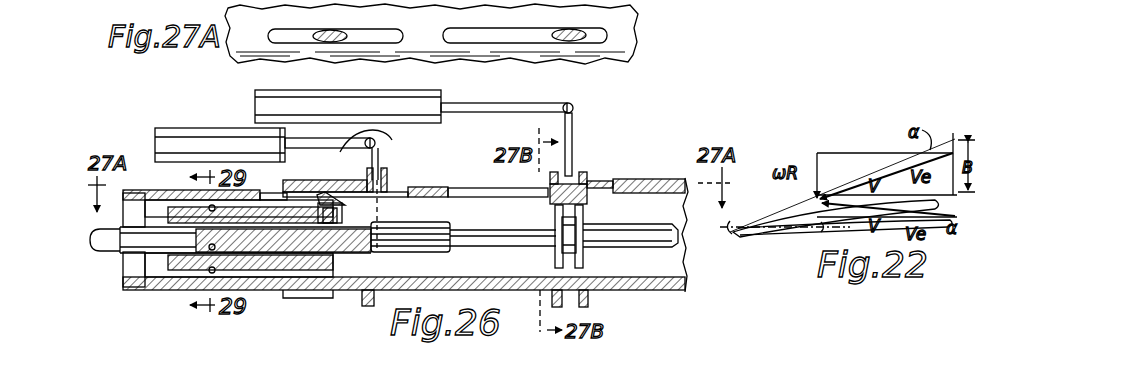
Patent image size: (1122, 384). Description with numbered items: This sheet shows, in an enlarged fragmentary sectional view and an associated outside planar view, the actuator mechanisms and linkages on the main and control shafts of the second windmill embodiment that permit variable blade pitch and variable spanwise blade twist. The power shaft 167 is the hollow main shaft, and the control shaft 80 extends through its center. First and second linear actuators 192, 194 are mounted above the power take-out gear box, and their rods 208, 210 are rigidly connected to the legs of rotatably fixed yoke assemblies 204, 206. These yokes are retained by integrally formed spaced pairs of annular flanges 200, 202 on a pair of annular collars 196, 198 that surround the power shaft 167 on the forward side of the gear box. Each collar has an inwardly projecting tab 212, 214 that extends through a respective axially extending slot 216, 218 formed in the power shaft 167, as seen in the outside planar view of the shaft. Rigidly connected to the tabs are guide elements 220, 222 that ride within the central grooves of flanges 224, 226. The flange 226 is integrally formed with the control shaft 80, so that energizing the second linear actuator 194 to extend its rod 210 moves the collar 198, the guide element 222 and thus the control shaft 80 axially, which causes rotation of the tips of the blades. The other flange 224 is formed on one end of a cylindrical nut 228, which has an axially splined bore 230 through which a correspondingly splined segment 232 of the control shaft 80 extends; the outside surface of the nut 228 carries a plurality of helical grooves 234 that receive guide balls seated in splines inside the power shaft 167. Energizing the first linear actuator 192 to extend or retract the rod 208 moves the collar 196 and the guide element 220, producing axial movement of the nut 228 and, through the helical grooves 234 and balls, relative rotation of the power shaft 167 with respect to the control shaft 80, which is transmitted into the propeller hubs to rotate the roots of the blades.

In FIG. 26, the power shaft 167 is at (148, 190).
In FIG. 26, the first linear actuator 192 is at (200, 137).
In FIG. 26, the second linear actuator 194 is at (423, 126).
In FIG. 26, the annular collar 196 is at (366, 185).
In FIG. 26, the annular collar 198 is at (650, 182).
In FIG. 26, the annular flanges 200 is at (367, 172).
In FIG. 26, the annular flanges 202 is at (584, 182).
In FIG. 26, the yoke assembly 204 is at (382, 211).
In FIG. 26, the yoke assembly 206 is at (566, 178).
In FIG. 26, the rod 208 is at (384, 142).
In FIG. 26, the rod 210 is at (533, 96).
In FIG. 27A, the tab 212 is at (340, 40).
In FIG. 26, the tab 212 is at (290, 198).
In FIG. 27A, the tab 214 is at (580, 35).
In FIG. 26, the tab 214 is at (552, 188).
In FIG. 27A, the axially extending slot 216 is at (290, 33).
In FIG. 26, the axially extending slot 216 is at (400, 190).
In FIG. 27A, the axially extending slot 218 is at (530, 33).
In FIG. 26, the axially extending slot 218 is at (462, 190).
In FIG. 26, the guide element 220 is at (372, 251).
In FIG. 26, the guide element 222 is at (600, 249).
In FIG. 26, the flange 224 is at (368, 300).
In FIG. 26, the flange 226 is at (554, 262).
In FIG. 26, the cylindrical nut 228 is at (283, 265).
In FIG. 26, the axially splined bore 230 is at (200, 255).
In FIG. 26, the splined segment 232 is at (136, 258).
In FIG. 26, the helical grooves 234 is at (306, 291).
In FIG. 26, the control shaft 80 is at (520, 233).